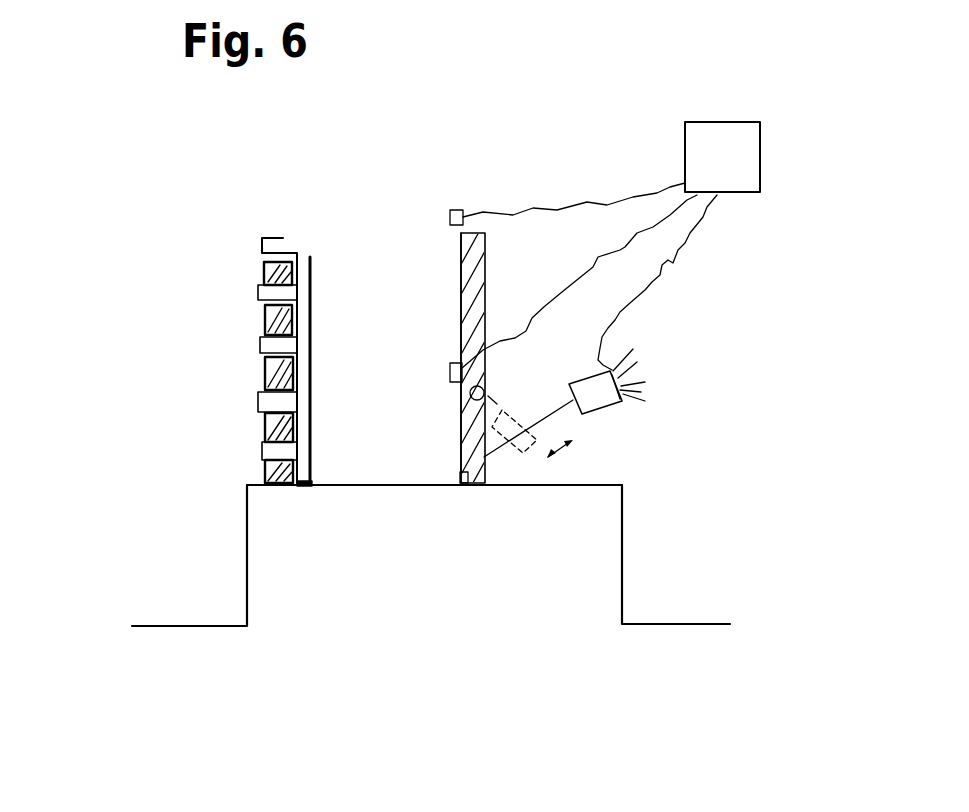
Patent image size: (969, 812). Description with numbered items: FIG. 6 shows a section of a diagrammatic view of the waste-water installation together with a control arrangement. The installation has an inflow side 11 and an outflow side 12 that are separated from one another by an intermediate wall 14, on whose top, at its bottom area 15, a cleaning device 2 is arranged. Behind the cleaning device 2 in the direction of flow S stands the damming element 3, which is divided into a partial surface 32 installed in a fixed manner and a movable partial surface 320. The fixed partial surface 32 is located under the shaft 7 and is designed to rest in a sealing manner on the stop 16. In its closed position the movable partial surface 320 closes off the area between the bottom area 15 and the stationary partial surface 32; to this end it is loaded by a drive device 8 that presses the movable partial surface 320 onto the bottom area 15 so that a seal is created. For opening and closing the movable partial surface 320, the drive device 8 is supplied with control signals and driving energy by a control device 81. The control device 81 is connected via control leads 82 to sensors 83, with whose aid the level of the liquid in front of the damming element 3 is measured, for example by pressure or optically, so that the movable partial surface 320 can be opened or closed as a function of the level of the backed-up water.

The cleaning device 2 is at (224, 264).
The damming element 3 is at (562, 337).
The shaft 7 is at (487, 390).
The drive device 8 is at (638, 377).
The inflow side 11 is at (198, 582).
The outflow side 12 is at (647, 513).
The intermediate wall 14 is at (588, 582).
The bottom area 15 is at (362, 483).
The stop 16 is at (462, 482).
The partial surface 32 is at (470, 253).
The control device 81 is at (735, 187).
The control leads 82 is at (623, 204).
The sensors 83 is at (456, 210).
The movable partial surface 320 is at (470, 440).
The direction of flow S is at (204, 370).